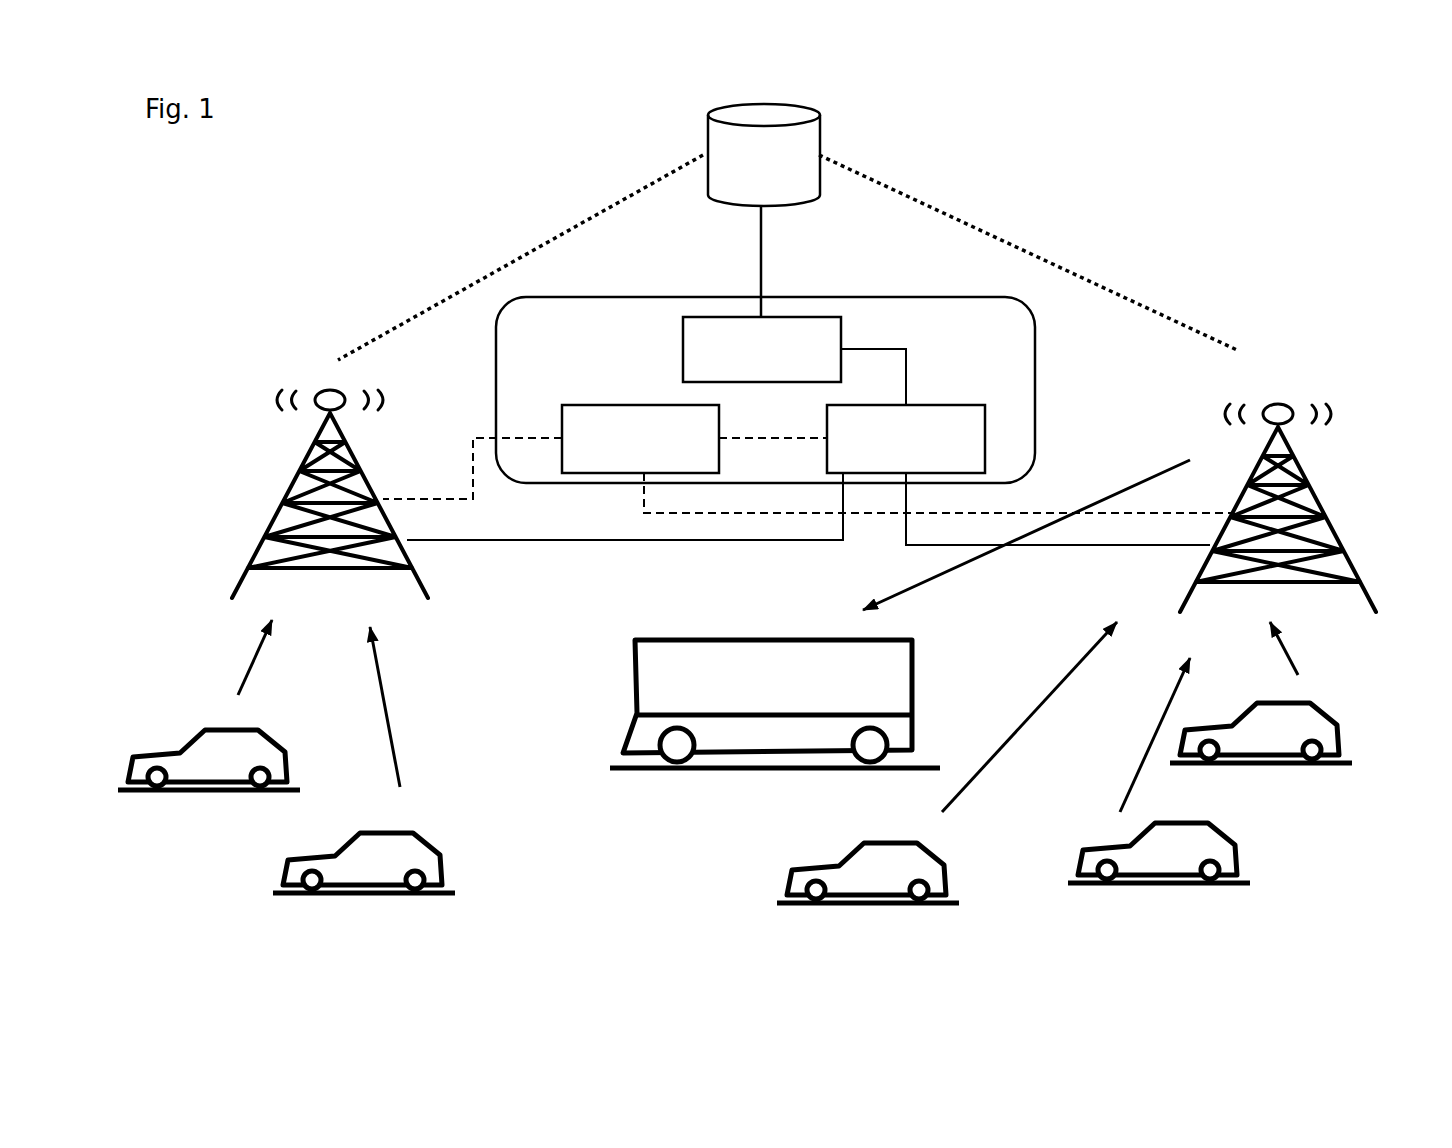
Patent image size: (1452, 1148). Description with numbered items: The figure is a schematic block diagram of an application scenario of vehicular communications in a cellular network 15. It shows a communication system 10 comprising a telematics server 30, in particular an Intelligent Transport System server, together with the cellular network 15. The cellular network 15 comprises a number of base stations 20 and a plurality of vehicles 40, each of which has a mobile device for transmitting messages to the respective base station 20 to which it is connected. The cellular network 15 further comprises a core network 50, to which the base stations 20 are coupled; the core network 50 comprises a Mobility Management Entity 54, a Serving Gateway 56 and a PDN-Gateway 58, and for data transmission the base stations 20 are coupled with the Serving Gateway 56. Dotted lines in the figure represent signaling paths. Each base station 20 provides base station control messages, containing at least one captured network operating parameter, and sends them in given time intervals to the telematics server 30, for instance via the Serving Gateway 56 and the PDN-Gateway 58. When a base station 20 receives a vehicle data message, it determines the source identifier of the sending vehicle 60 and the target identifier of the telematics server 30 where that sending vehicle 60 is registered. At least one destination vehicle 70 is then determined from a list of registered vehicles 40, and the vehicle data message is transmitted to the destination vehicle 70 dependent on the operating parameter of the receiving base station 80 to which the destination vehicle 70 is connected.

The communication system 10 is at (1215, 158).
The cellular network 15 is at (1172, 255).
The base station 20 is at (298, 473).
The telematics server 30 is at (830, 143).
The vehicle 40 is at (772, 742).
The core network 50 is at (811, 359).
The Mobility Management Entity 54 is at (661, 405).
The Serving Gateway 56 is at (985, 438).
The PDN-Gateway 58 is at (841, 340).
The sending vehicle 60 is at (1263, 818).
The destination vehicle 70 is at (915, 673).
The receiving base station 80 is at (1335, 517).